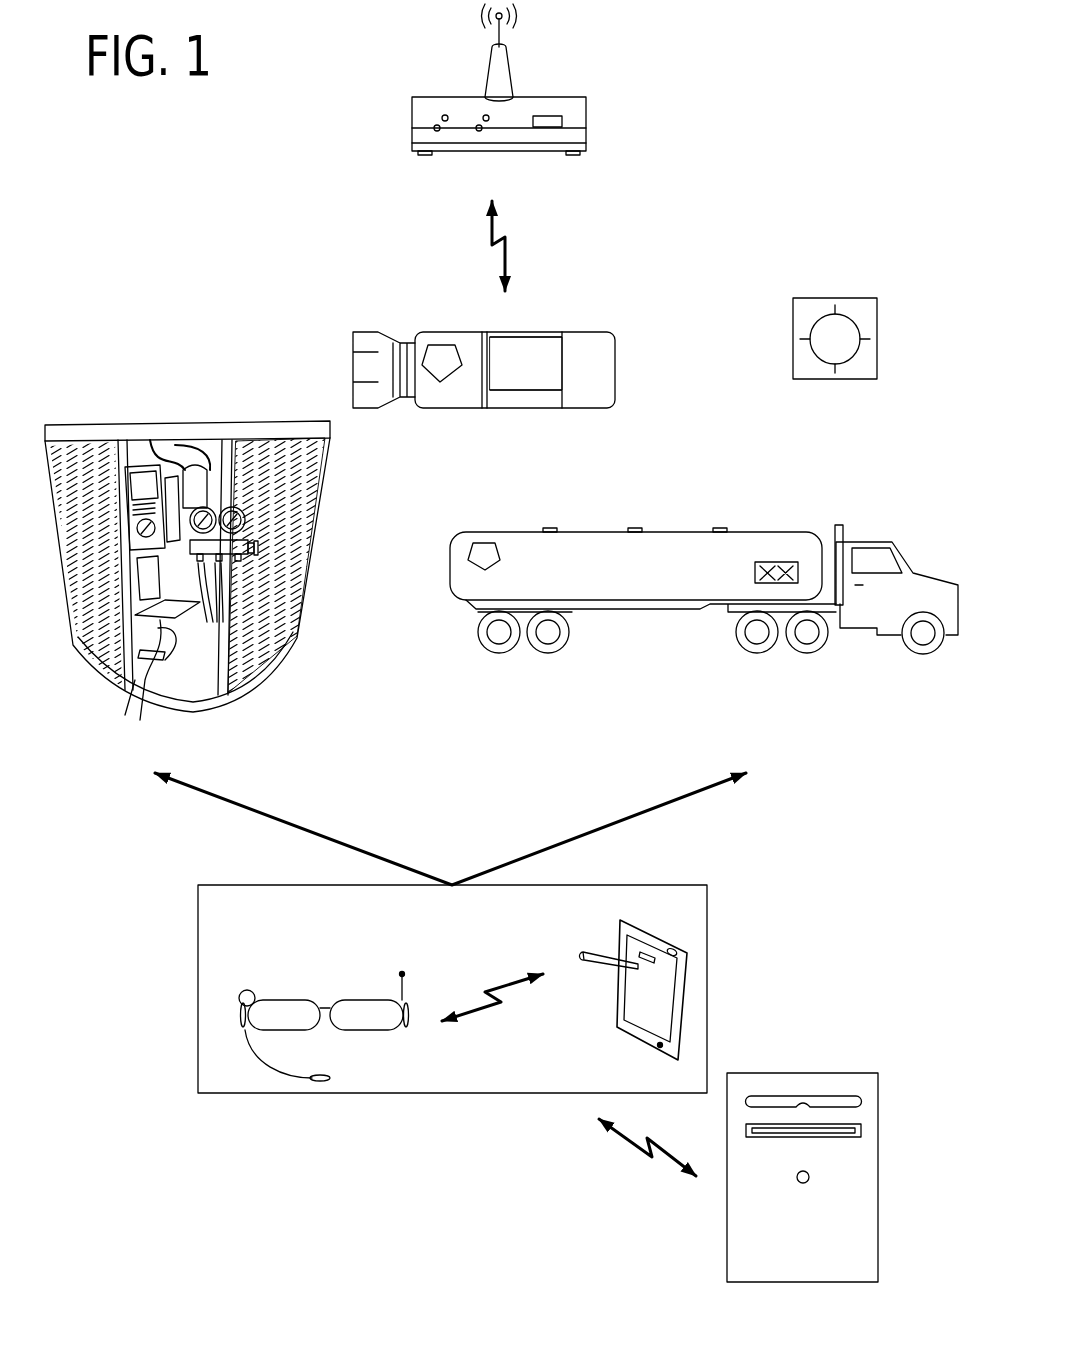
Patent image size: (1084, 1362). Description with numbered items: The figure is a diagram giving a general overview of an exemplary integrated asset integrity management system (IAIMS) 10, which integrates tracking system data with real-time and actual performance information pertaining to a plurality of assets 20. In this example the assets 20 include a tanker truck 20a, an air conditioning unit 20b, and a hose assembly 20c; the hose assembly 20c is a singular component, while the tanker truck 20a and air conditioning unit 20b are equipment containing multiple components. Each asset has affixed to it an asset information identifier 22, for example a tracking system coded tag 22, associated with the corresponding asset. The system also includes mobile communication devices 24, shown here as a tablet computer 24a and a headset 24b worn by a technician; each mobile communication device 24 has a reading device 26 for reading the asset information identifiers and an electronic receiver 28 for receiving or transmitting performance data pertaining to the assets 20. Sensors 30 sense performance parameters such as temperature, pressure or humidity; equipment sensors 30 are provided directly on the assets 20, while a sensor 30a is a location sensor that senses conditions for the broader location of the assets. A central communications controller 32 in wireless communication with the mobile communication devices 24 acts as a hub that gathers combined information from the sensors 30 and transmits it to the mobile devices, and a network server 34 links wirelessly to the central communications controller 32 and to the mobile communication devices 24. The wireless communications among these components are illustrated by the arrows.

The integrated asset integrity management system 10 is at (792, 128).
The assets 20 is at (280, 377).
The tanker truck 20a is at (695, 543).
The air conditioning unit 20b is at (75, 432).
The hose assembly 20c is at (587, 334).
The asset information identifier 22 is at (278, 570).
The mobile communication devices 24 is at (197, 1042).
The tablet computer 24a is at (688, 993).
The headset 24b is at (290, 1003).
The reading device 26 is at (242, 1000).
The electronic receiver 28 is at (402, 974).
The sensors 30 is at (243, 528).
The location sensor 30a is at (826, 298).
The central communications controller 32 is at (587, 113).
The network server 34 is at (836, 1073).